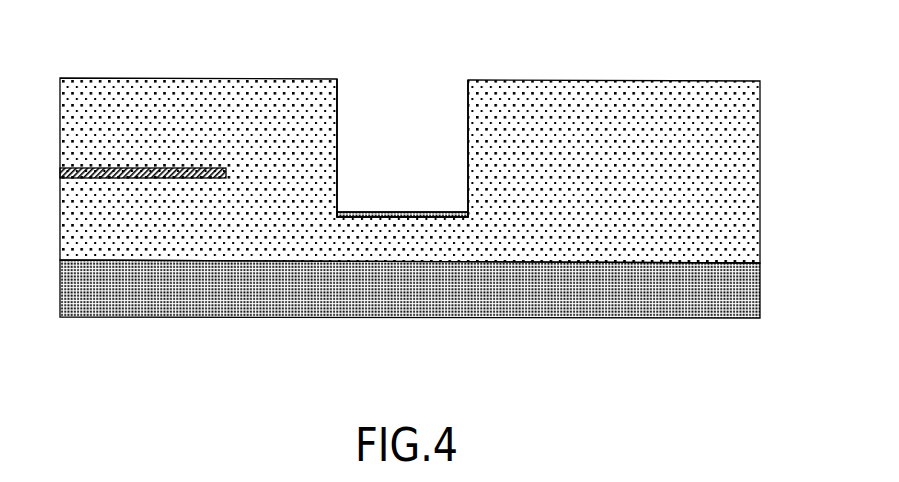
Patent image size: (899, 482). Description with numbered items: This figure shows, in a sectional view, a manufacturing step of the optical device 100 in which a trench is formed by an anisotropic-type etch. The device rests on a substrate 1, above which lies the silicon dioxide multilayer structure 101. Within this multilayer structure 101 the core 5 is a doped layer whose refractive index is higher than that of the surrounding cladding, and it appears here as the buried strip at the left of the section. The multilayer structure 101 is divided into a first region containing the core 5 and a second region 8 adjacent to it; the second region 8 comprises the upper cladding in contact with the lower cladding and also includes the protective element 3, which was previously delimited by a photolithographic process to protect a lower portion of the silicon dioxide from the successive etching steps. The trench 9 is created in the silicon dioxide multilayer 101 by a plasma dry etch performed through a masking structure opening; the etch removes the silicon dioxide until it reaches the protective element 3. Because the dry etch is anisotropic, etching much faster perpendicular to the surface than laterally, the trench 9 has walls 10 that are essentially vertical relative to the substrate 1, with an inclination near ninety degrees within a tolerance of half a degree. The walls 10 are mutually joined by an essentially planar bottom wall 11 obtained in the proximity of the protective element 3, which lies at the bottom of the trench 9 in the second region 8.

The optical device 100 is at (441, 241).
The silicon dioxide multilayer structure 101 is at (770, 80).
The substrate 1 is at (72, 298).
The core layer 5 is at (60, 172).
The trench 9 is at (408, 169).
The walls 10 is at (340, 127).
The bottom wall 11 is at (409, 208).
The protective element 3 is at (362, 217).
The second region 8 is at (250, 321).